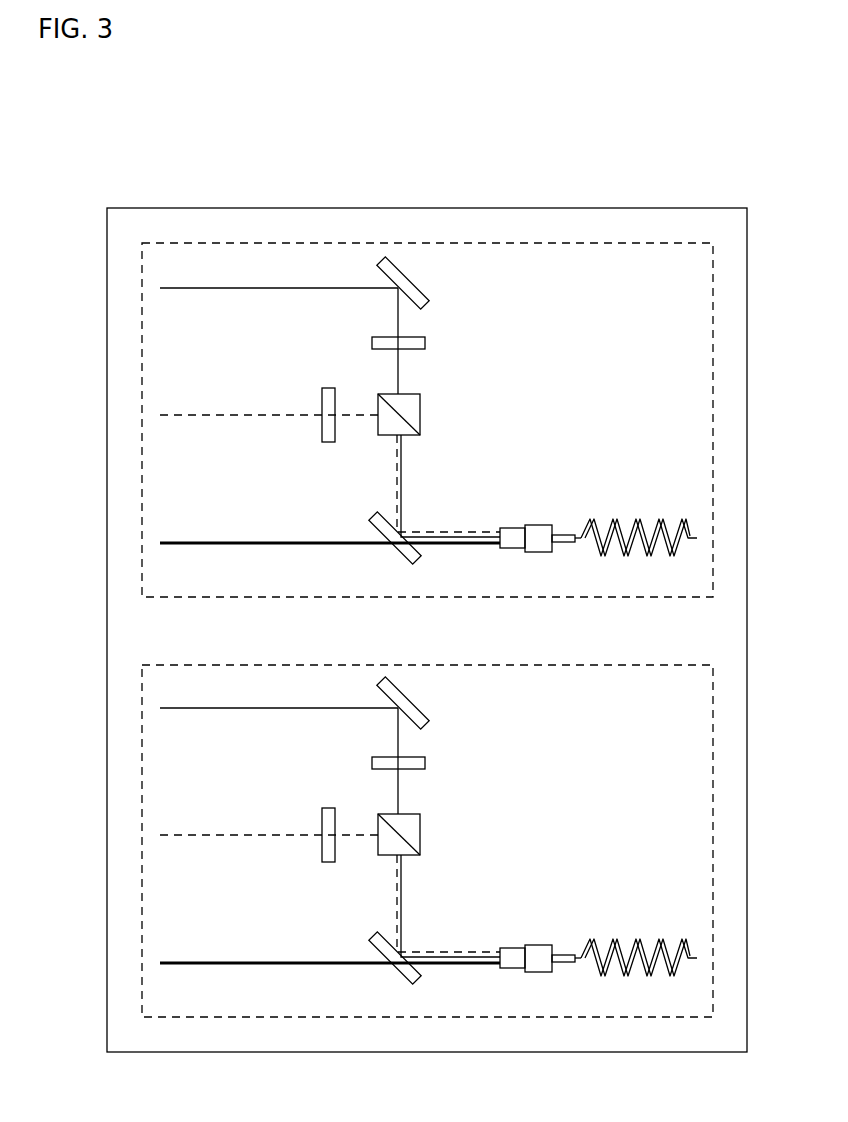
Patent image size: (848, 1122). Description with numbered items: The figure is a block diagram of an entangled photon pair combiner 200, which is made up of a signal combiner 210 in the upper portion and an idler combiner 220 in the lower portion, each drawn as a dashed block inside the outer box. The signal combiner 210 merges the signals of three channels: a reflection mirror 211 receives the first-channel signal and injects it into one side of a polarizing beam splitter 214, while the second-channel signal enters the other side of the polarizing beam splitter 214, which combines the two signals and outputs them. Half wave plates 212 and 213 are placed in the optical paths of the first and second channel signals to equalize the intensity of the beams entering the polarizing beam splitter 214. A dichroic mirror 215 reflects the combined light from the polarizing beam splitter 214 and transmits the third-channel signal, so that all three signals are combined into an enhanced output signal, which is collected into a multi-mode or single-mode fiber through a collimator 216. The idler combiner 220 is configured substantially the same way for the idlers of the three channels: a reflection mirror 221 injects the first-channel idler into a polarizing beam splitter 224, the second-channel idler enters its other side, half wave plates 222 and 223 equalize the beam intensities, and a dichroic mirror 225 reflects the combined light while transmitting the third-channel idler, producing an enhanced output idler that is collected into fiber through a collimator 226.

The entangled photon pair combiner 200 is at (380, 209).
The signal combiner 210 is at (142, 360).
The reflection mirror 211 is at (430, 296).
The half wave plate 212 is at (327, 388).
The half wave plate 213 is at (426, 343).
The polarizing beam splitter 214 is at (421, 413).
The dichroic mirror 215 is at (372, 517).
The collimator 216 is at (537, 525).
The idler combiner 220 is at (142, 787).
The reflection mirror 221 is at (430, 716).
The half wave plate 222 is at (327, 808).
The half wave plate 223 is at (426, 763).
The polarizing beam splitter 224 is at (421, 833).
The dichroic mirror 225 is at (372, 937).
The collimator 226 is at (537, 945).